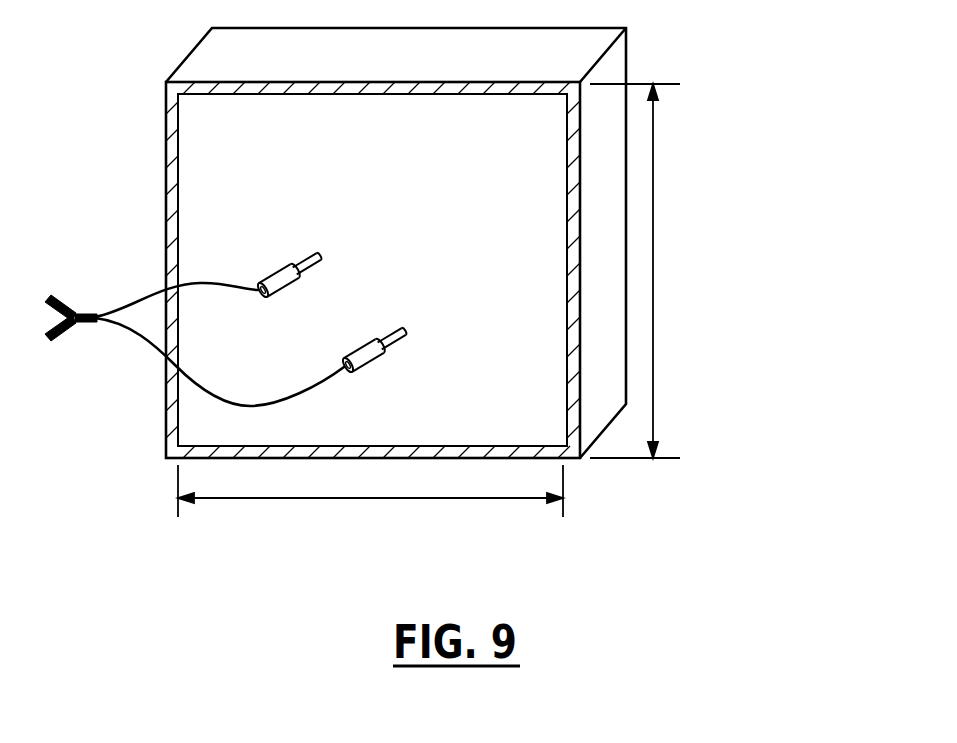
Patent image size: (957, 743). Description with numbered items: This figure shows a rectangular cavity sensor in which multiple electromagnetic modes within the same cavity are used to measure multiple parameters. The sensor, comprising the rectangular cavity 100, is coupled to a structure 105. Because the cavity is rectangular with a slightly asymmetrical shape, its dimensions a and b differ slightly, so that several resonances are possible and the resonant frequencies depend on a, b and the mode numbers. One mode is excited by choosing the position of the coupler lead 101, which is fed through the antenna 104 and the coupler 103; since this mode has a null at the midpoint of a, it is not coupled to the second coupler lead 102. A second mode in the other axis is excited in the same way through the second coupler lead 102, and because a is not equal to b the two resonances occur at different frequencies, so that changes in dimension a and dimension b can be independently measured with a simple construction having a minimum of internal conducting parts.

The rectangular cavity 100 is at (513, 198).
The coupler lead 101 is at (291, 295).
The second coupler lead 102 is at (383, 359).
The coupler 103 is at (142, 344).
The antenna 104 is at (56, 298).
The structure 105 is at (838, 289).